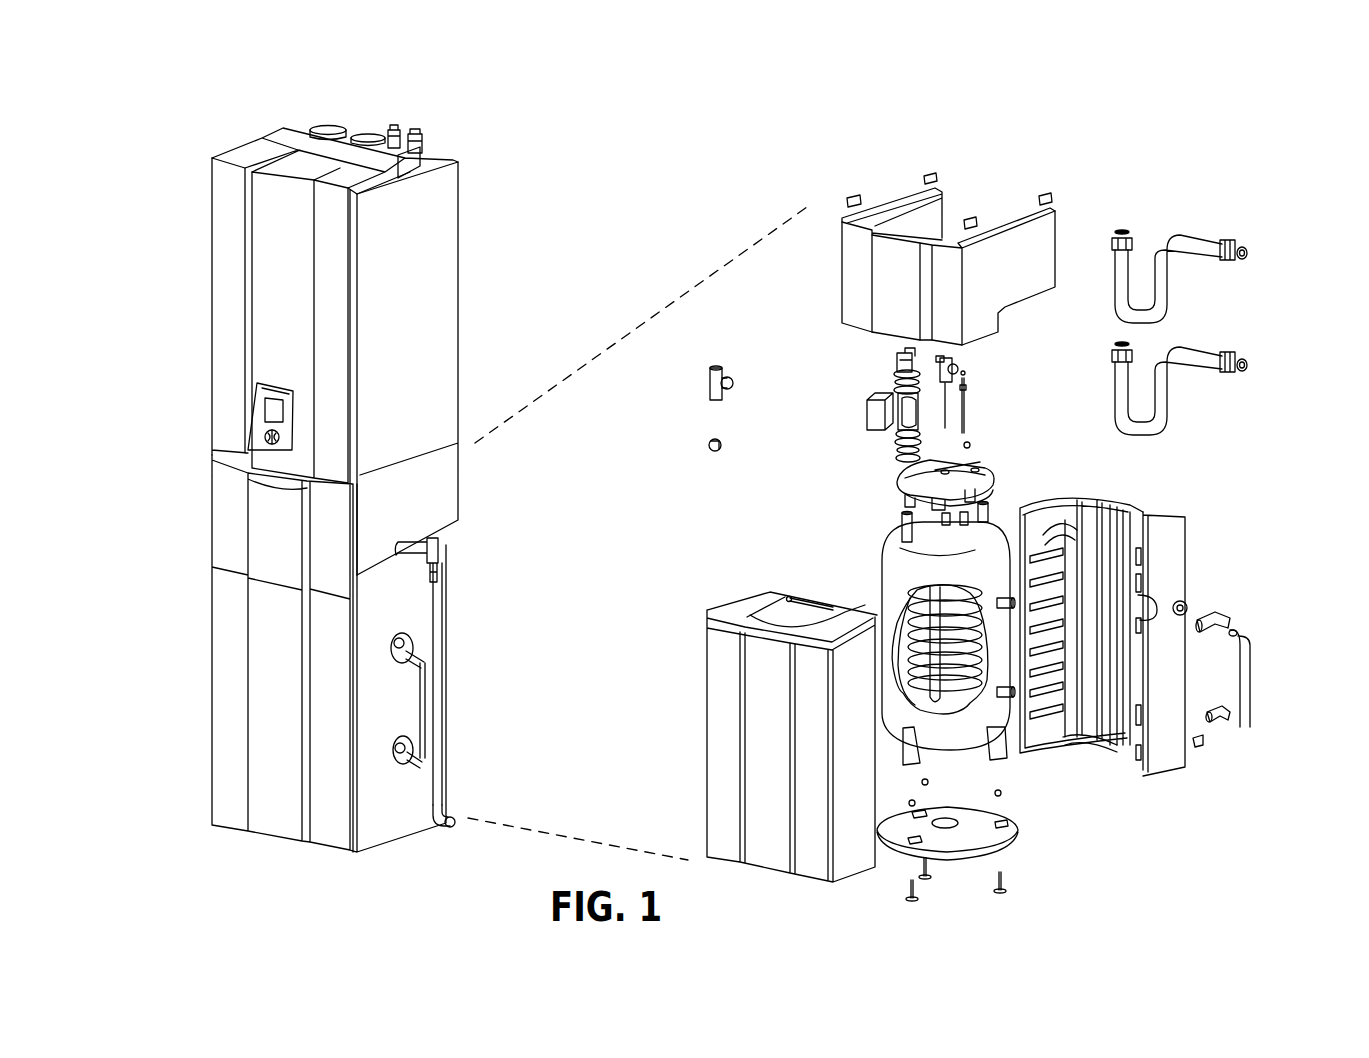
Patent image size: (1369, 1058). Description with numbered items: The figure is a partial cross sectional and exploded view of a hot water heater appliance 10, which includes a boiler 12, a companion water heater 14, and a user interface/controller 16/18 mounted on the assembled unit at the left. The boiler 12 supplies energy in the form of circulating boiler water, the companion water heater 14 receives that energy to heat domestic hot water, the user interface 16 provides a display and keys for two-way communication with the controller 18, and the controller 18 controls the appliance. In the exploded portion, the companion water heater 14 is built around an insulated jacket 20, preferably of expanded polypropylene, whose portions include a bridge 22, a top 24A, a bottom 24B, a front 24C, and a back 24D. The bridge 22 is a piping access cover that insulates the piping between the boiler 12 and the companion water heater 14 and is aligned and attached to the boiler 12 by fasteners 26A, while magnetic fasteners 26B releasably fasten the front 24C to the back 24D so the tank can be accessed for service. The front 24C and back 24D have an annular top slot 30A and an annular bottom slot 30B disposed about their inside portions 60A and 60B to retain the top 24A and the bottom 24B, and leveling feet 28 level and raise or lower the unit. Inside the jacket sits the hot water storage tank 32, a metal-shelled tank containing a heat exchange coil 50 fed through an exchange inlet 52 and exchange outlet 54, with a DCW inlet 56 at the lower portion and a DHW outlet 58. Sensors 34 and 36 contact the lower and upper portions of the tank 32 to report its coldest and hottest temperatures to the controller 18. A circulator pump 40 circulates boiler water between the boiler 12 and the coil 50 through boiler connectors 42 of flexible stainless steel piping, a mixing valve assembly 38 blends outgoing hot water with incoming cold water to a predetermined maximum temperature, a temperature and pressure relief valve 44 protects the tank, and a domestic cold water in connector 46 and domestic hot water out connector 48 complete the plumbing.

The hot water heater appliance 10 is at (474, 127).
The boiler 12 is at (438, 305).
The companion water heater 14 is at (453, 640).
The user interface 16 is at (265, 418).
The controller 18 is at (224, 411).
The insulated jacket 20 is at (232, 712).
The bridge 22 is at (842, 268).
The top 24A is at (973, 471).
The bottom 24B is at (1018, 826).
The front 24C is at (710, 735).
The back 24D is at (1177, 516).
The fasteners 26A is at (1045, 198).
The magnetic fasteners 26B is at (1143, 722).
The leveling feet 28 is at (1000, 892).
The annular top slot 30A is at (1105, 503).
The annular bottom slot 30B is at (1112, 748).
The hot water storage tank 32 is at (878, 565).
The sensor 34 is at (820, 595).
The sensor 36 is at (972, 395).
The mixing valve assembly 38 is at (1257, 631).
The circulator pump 40 is at (866, 418).
The boiler connectors 42 is at (1233, 327).
The temperature and pressure relief valve 44 is at (965, 372).
The domestic cold water in connector 46 is at (1226, 735).
The domestic hot water out connector 48 is at (1220, 612).
The heat exchange coil 50 is at (945, 735).
The exchange inlet 52 is at (990, 508).
The exchange outlet 54 is at (902, 526).
The DCW inlet 56 is at (1028, 745).
The DHW outlet 58 is at (1025, 585).
The inside portion 60A is at (838, 615).
The inside portion 60B is at (1060, 556).